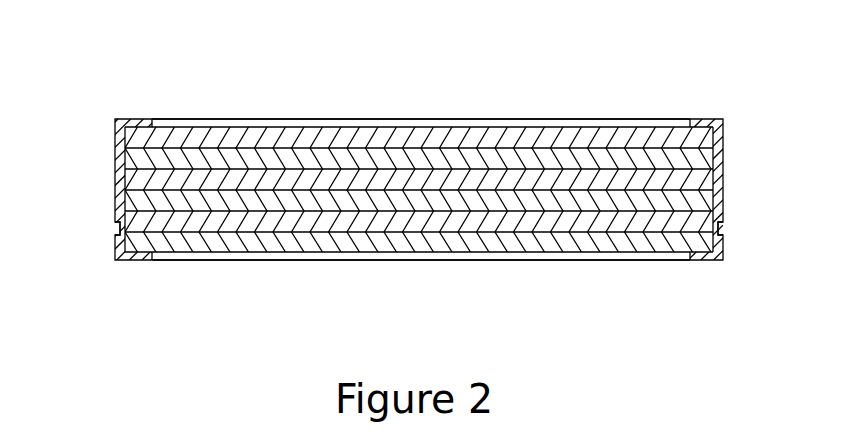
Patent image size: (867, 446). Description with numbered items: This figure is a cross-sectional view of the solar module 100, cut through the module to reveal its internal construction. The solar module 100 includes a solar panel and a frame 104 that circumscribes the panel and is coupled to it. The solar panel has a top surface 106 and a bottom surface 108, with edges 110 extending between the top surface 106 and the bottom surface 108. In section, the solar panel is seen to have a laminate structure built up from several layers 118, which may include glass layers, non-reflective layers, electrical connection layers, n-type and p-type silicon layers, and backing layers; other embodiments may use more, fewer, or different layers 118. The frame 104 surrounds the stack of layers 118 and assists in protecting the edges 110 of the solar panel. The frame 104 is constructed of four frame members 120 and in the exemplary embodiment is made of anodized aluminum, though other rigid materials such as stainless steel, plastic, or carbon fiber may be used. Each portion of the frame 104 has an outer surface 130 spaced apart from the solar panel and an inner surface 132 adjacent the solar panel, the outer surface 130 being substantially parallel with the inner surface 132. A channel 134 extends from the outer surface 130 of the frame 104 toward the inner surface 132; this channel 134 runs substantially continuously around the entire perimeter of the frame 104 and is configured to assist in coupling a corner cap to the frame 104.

The solar module 100 is at (160, 72).
The frame 104 is at (128, 121).
The top surface 106 is at (458, 128).
The bottom surface 108 is at (430, 253).
The edges 110 is at (125, 202).
The layers 118 is at (125, 212).
The frame members 120 is at (123, 155).
The outer surface 130 is at (113, 250).
The inner surface 132 is at (124, 236).
The channel 134 is at (106, 230).